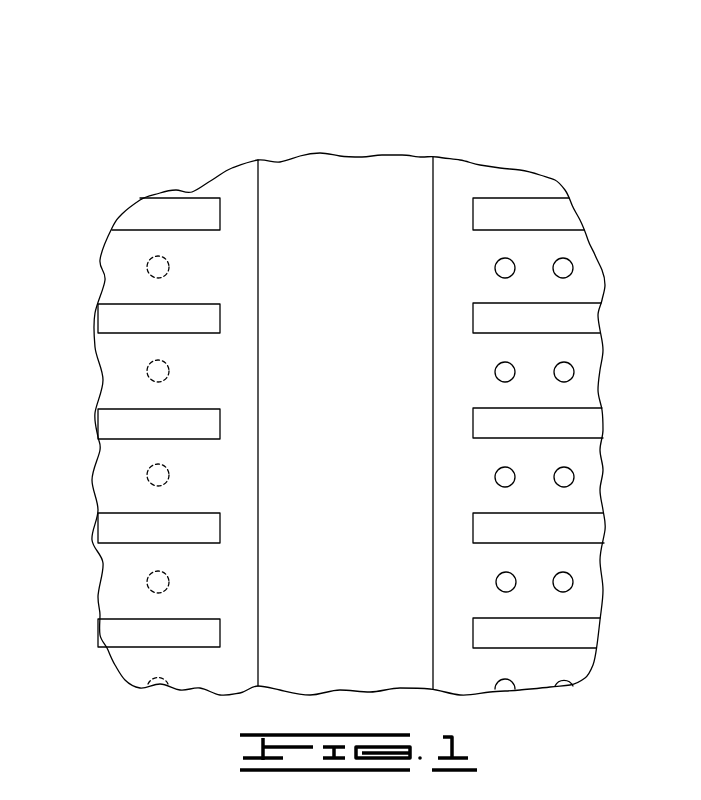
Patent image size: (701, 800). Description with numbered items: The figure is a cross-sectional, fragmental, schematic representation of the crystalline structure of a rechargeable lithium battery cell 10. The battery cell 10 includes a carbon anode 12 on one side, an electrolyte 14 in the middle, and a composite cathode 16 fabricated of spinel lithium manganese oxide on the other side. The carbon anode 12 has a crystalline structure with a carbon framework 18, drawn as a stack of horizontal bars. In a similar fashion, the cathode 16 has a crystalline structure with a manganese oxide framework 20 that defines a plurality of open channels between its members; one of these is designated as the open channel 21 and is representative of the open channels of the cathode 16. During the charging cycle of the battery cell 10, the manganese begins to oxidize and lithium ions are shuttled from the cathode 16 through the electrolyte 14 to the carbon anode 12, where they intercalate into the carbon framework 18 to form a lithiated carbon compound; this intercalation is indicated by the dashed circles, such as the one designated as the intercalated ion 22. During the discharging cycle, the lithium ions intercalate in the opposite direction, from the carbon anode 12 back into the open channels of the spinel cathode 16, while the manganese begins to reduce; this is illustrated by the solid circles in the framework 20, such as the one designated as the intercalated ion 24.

The rechargeable lithium battery cell 10 is at (228, 73).
The carbon anode 12 is at (190, 196).
The electrolyte 14 is at (370, 200).
The composite cathode 16 is at (536, 197).
The carbon framework 18 is at (110, 318).
The Mn2O4 framework 20 is at (575, 310).
The open channel 21 is at (580, 348).
The intercalated Li+ ion during charging 22 is at (146, 476).
The intercalated Li+ ion during discharging 24 is at (574, 468).